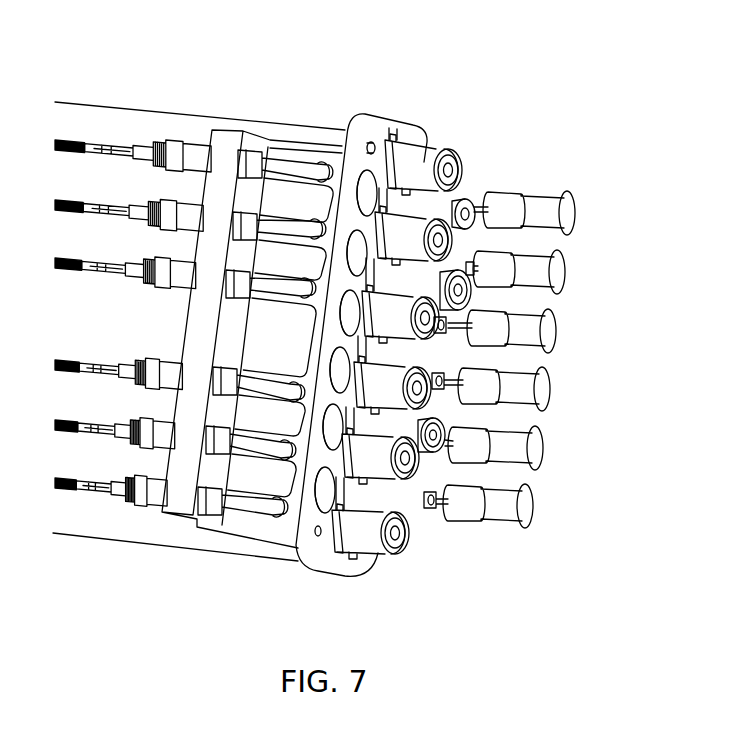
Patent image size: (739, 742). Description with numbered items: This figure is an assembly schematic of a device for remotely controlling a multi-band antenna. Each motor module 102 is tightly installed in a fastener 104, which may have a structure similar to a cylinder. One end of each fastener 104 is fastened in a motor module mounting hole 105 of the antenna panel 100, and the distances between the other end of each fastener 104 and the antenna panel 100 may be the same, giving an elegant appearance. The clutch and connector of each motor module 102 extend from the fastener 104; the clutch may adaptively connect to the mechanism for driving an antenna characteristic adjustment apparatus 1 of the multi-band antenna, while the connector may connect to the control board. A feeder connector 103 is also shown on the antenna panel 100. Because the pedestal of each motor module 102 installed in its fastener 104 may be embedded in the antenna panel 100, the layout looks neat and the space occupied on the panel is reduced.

The mechanism for driving an antenna characteristic adjustment apparatus 1 is at (225, 118).
The antenna panel 100 is at (368, 112).
The motor module 102 is at (572, 192).
The feeder connector 103 is at (440, 221).
The fastener 104 is at (255, 473).
The mounting hole of the motor module 105 is at (323, 487).